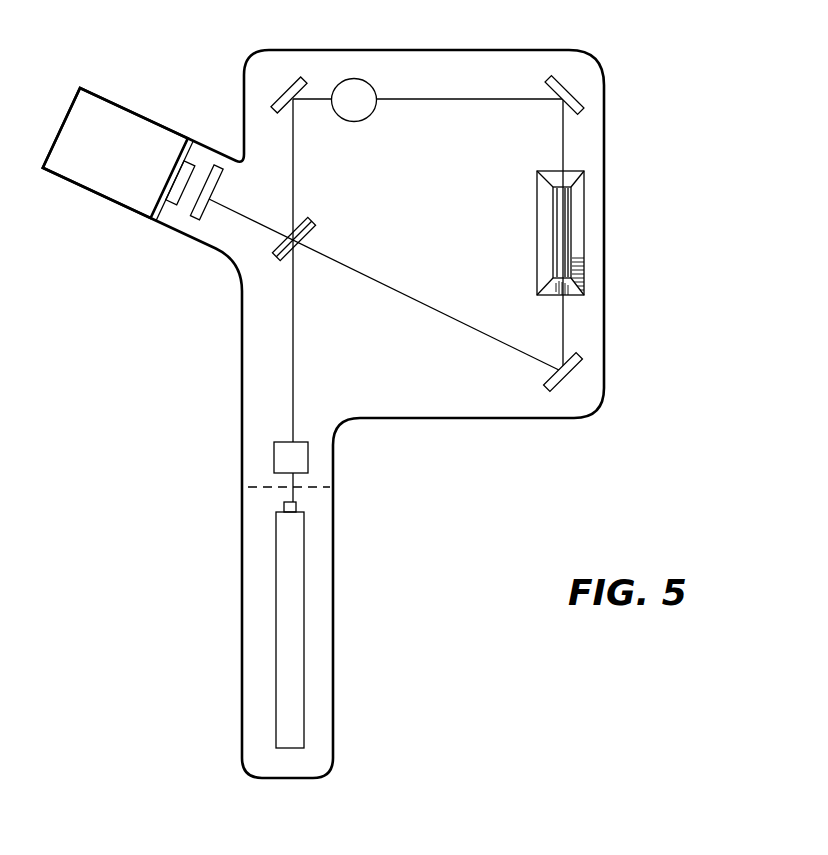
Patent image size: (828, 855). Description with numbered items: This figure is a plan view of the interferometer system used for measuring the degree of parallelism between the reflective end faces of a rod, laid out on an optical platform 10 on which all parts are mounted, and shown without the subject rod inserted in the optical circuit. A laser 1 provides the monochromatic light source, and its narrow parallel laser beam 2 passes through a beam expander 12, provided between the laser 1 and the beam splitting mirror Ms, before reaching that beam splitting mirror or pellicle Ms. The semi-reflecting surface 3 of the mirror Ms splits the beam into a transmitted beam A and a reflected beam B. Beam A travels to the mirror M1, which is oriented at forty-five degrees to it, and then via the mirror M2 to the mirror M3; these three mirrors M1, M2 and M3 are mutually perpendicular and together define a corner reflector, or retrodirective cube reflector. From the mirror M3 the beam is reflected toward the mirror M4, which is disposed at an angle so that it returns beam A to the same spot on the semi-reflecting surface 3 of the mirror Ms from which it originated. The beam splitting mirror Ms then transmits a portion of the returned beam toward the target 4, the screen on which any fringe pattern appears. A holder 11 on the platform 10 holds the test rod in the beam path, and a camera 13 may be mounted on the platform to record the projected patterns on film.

The laser 1 is at (307, 591).
The laser beam 2 is at (293, 372).
The semi-reflecting surface 3 is at (307, 260).
The target 4 is at (189, 230).
The optical platform 10 is at (606, 332).
The holder 11 is at (705, 254).
The beam expander 12 is at (312, 466).
The camera 13 is at (87, 195).
The mirror M1 is at (281, 89).
The mirror M2 is at (350, 73).
The mirror M3 is at (574, 86).
The mirror M4 is at (572, 383).
The beam splitting mirror Ms is at (301, 258).